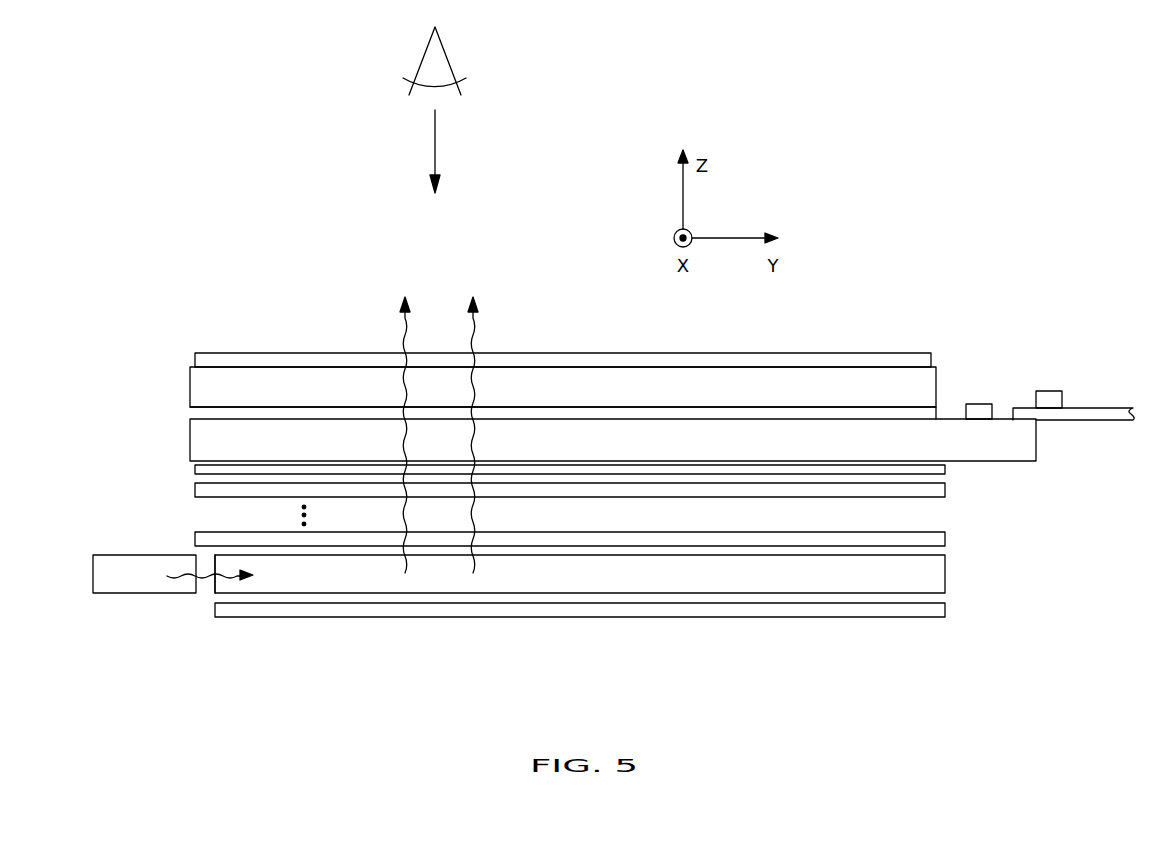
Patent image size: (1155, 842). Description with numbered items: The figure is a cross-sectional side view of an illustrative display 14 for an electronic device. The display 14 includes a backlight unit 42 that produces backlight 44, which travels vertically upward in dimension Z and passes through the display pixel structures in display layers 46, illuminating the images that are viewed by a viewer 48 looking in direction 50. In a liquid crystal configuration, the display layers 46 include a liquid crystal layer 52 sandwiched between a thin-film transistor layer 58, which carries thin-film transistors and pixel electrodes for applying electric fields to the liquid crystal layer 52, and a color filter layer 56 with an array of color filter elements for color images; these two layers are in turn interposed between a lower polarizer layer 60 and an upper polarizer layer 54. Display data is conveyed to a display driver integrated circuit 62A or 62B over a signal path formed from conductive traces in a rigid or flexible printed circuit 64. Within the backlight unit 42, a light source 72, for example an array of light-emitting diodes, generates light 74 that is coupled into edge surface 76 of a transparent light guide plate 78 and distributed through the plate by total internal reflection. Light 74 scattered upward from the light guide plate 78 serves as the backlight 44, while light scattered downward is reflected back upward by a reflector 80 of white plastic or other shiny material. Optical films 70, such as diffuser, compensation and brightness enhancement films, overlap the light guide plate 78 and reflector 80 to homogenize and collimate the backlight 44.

The display 14 is at (972, 151).
The backlight unit 42 is at (955, 483).
The backlight 44 is at (468, 333).
The display layers 46 is at (143, 351).
The viewer 48 is at (448, 58).
The direction 50 is at (437, 155).
The liquid crystal layer 52 is at (262, 412).
The upper polarizer layer 54 is at (215, 360).
The color filter layer 56 is at (195, 380).
The thin-film transistor layer 58 is at (195, 443).
The lower polarizer layer 60 is at (197, 469).
The display driver integrated circuit 62A is at (977, 403).
The display driver integrated circuit 62B is at (1048, 391).
The printed circuit 64 is at (1087, 415).
The optical films 70 is at (208, 537).
The light source 72 is at (102, 583).
The light 74 is at (183, 572).
The edge surface 76 is at (215, 585).
The light guide plate 78 is at (298, 585).
The reflector 80 is at (377, 613).